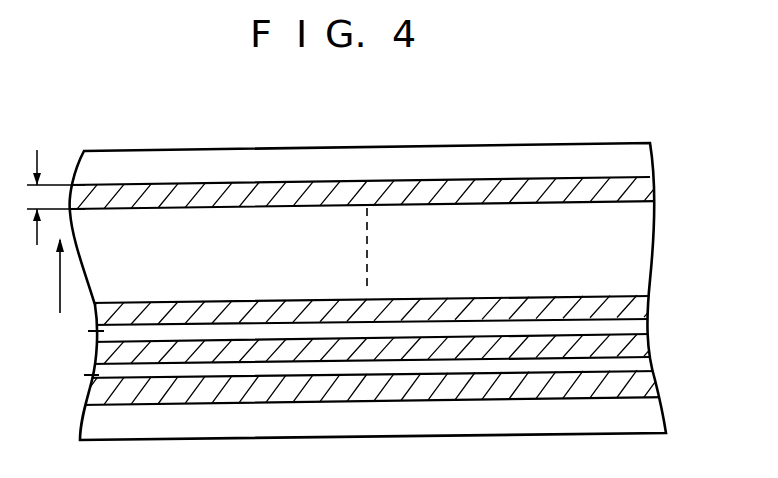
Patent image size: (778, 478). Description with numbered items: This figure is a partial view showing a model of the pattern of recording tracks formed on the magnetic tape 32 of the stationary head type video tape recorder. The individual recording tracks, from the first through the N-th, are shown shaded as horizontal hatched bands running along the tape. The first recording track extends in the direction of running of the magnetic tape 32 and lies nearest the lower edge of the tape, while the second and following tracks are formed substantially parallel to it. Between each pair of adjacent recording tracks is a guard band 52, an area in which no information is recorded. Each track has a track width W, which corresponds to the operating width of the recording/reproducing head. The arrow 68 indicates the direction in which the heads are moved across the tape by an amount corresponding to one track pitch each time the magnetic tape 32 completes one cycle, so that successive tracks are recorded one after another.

The magnetic tape 32 is at (590, 150).
The arrow 68 is at (59, 283).
The guard band 52 is at (92, 375).
The track width W is at (48, 197).